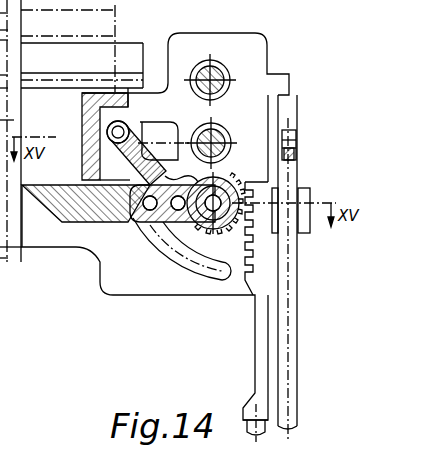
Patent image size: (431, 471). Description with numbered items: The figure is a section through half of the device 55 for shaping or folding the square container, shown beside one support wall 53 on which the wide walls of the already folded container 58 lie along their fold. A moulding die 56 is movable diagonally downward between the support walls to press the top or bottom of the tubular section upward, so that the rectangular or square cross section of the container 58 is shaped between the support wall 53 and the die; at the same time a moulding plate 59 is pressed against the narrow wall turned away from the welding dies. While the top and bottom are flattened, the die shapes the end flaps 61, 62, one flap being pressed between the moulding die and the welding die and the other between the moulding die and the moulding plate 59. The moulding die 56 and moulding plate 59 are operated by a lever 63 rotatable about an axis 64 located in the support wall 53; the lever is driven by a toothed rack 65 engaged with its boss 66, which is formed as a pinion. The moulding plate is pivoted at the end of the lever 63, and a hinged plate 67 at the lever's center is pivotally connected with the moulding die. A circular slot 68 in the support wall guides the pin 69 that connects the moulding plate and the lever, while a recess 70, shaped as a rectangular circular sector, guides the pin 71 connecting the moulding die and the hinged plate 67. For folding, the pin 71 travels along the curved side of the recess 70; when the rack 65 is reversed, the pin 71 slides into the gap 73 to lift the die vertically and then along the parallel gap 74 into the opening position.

The support wall 53 is at (47, 237).
The device for shaping or folding the square container 55 is at (236, 31).
The moulding die 56 is at (88, 106).
The folded container 58 is at (33, 106).
The moulding plate 59 is at (115, 220).
The end flap 61 is at (118, 90).
The end flap 62 is at (110, 183).
The lever 63 is at (136, 225).
The axis 64 is at (230, 180).
The toothed rack 65 is at (258, 274).
The boss 66 is at (217, 226).
The hinged plate 67 is at (169, 176).
The circular slot 68 is at (190, 262).
The pin 69 is at (137, 208).
The recess 70 is at (145, 123).
The pin 71 is at (114, 148).
The gap 73 is at (152, 129).
The gap 74 is at (180, 143).